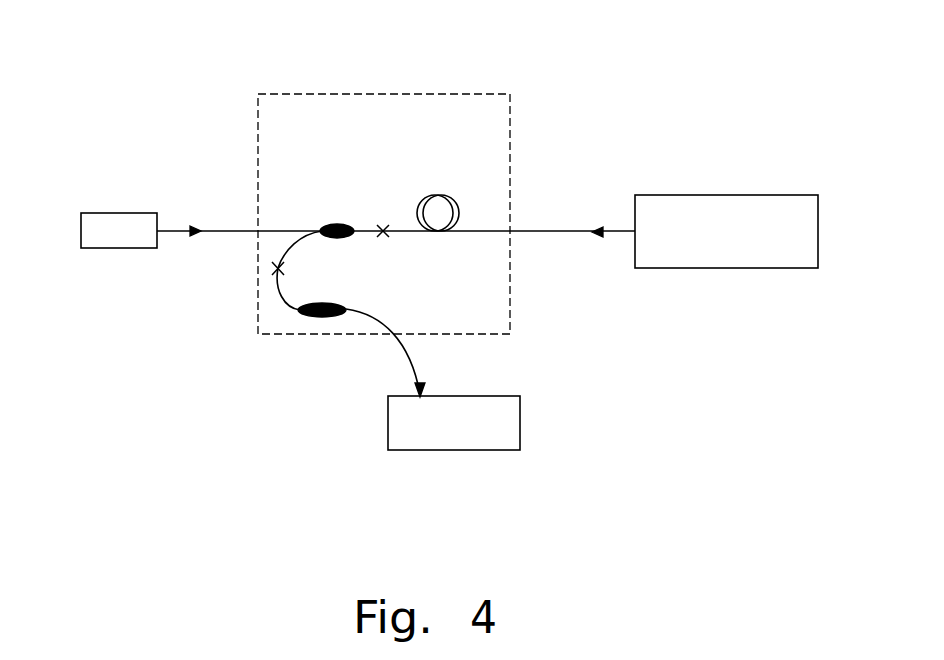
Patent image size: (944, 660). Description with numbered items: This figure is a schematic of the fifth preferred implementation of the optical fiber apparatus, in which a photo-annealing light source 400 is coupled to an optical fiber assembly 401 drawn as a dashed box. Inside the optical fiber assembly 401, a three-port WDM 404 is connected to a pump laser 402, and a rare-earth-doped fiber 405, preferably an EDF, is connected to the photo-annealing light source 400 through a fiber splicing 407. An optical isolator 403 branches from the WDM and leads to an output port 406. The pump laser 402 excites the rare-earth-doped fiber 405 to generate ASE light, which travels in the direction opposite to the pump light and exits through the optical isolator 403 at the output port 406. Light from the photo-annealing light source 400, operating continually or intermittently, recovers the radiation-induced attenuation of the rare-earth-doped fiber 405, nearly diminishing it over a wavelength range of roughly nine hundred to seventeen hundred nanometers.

The photo-annealing light source 400 is at (763, 195).
The optical fiber assembly 401 is at (312, 94).
The pump laser 402 is at (115, 213).
The optical isolator 403 is at (322, 317).
The 3-port WDM 404 is at (330, 224).
The rare-earth-doped fiber 405 is at (449, 196).
The output port 406 is at (455, 452).
The fiber splicing 407 is at (384, 226).